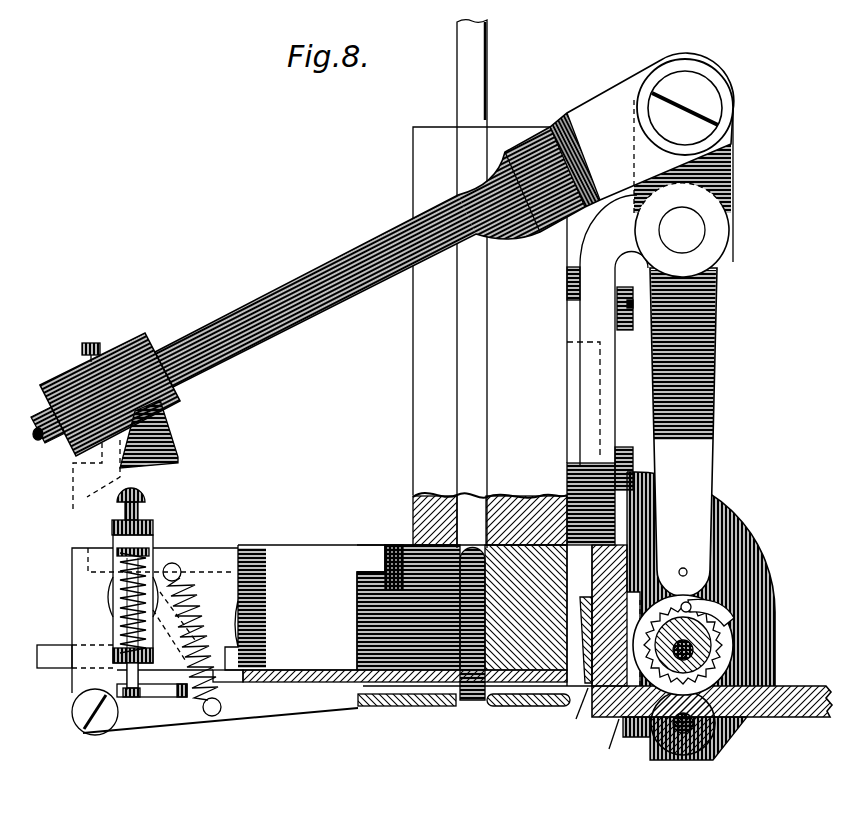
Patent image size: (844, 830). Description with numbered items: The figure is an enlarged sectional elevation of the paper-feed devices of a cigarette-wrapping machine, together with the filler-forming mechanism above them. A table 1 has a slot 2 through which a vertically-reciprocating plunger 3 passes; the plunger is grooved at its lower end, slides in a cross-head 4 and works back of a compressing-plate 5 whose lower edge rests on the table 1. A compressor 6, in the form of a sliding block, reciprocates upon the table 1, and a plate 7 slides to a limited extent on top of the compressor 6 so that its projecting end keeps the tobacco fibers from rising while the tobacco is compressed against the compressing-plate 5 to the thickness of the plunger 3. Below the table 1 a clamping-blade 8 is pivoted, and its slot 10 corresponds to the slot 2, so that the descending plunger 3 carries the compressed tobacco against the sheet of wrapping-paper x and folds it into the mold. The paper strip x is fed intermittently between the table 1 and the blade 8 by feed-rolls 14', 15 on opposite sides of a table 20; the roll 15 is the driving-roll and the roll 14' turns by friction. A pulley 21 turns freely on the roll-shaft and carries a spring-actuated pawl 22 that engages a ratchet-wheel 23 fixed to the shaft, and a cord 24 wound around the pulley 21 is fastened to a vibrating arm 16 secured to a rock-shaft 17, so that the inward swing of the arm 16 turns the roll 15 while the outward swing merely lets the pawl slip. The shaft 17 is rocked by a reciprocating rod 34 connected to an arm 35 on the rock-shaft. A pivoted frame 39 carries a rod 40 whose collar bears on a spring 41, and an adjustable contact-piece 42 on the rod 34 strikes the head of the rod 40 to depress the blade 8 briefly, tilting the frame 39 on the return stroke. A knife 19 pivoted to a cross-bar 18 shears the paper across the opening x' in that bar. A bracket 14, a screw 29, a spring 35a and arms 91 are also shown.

The table 1 is at (320, 683).
The slot 2 is at (463, 682).
The plunger 3 is at (488, 74).
The cross-head 4 is at (413, 342).
The compressing-plate 5 is at (526, 607).
The compressor 6 is at (305, 609).
The plate 7 is at (311, 571).
The clamping-blade 8 is at (187, 715).
The slot 10 is at (478, 709).
The bracket 14 is at (723, 579).
The feed-roll 14' is at (683, 737).
The driving-roll 15 is at (683, 645).
The vibrating arm 16 is at (712, 466).
The rock-shaft 17 is at (682, 230).
The cross-bar 18 is at (613, 546).
The knife 19 is at (585, 598).
The table 20 is at (787, 722).
The pulley 21 is at (737, 638).
The spring-actuated pawl 22 is at (828, 604).
The ratchet-wheel 23 is at (727, 660).
The cord 24 is at (706, 606).
The screw 29 is at (617, 315).
The reciprocating rod 34 is at (258, 307).
The arm 35 is at (722, 147).
The spring 35a is at (193, 616).
The pivoted frame 39 is at (153, 527).
The rod 40 is at (148, 507).
The spring 41 is at (113, 627).
The adjustable contact-piece 42 is at (178, 452).
The arms 91 is at (721, 750).
The sheet of wrapping-paper x is at (577, 716).
The opening x' is at (606, 746).